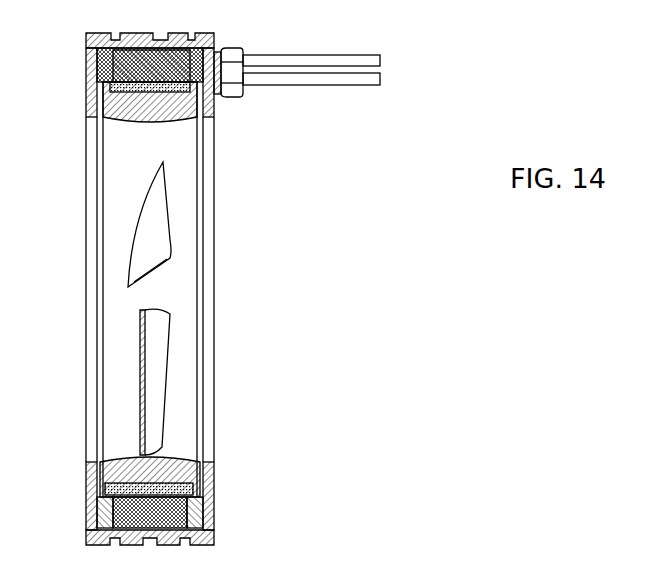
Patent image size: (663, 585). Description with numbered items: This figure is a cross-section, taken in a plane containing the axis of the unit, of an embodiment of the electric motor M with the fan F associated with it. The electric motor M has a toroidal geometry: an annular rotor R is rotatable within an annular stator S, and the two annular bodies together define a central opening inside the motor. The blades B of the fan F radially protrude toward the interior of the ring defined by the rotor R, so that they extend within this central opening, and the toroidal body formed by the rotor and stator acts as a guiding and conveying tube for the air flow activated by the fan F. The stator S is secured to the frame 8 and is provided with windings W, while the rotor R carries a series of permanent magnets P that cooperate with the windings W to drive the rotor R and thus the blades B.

The electric motor M is at (277, 301).
The fan F is at (227, 360).
The frame 8 is at (206, 474).
The annular rotor R is at (177, 118).
The permanent magnets P is at (143, 90).
The annular stator S is at (149, 523).
The windings W is at (103, 512).
The blades B is at (158, 230).